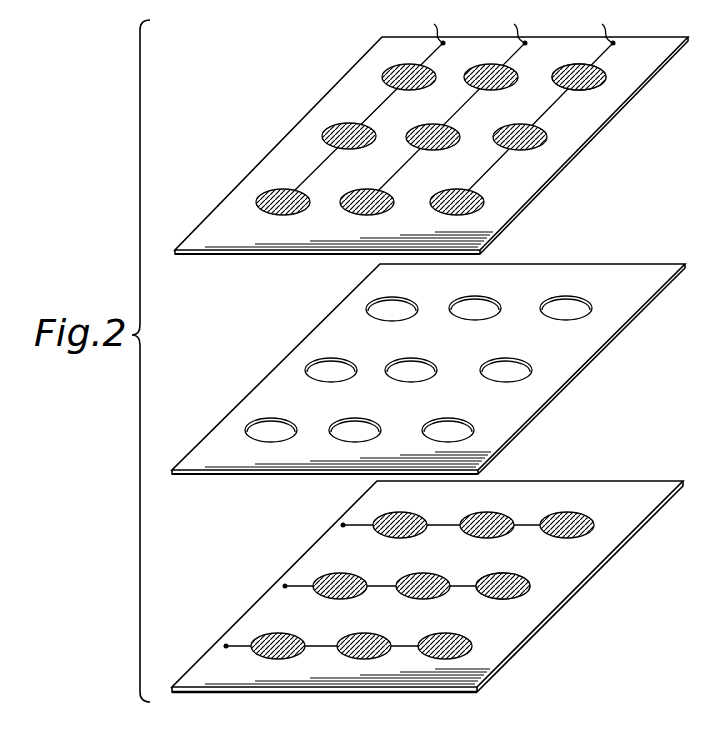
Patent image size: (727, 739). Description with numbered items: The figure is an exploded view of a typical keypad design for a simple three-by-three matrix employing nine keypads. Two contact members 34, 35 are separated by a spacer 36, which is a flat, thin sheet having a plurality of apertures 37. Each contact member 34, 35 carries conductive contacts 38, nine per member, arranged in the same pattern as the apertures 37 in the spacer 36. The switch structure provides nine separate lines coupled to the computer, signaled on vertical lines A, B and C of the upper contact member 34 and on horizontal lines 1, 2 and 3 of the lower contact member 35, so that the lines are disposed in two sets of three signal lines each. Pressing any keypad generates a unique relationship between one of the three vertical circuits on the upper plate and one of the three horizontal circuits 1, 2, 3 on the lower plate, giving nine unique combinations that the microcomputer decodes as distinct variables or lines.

The contact member 34 is at (611, 137).
The contact member 35 is at (427, 586).
The spacer 36 is at (428, 369).
The aperture 37 is at (318, 370).
The conductive contact 38 is at (600, 85).
The line # 1 is at (343, 525).
The line # 2 is at (285, 586).
The line # 3 is at (226, 646).